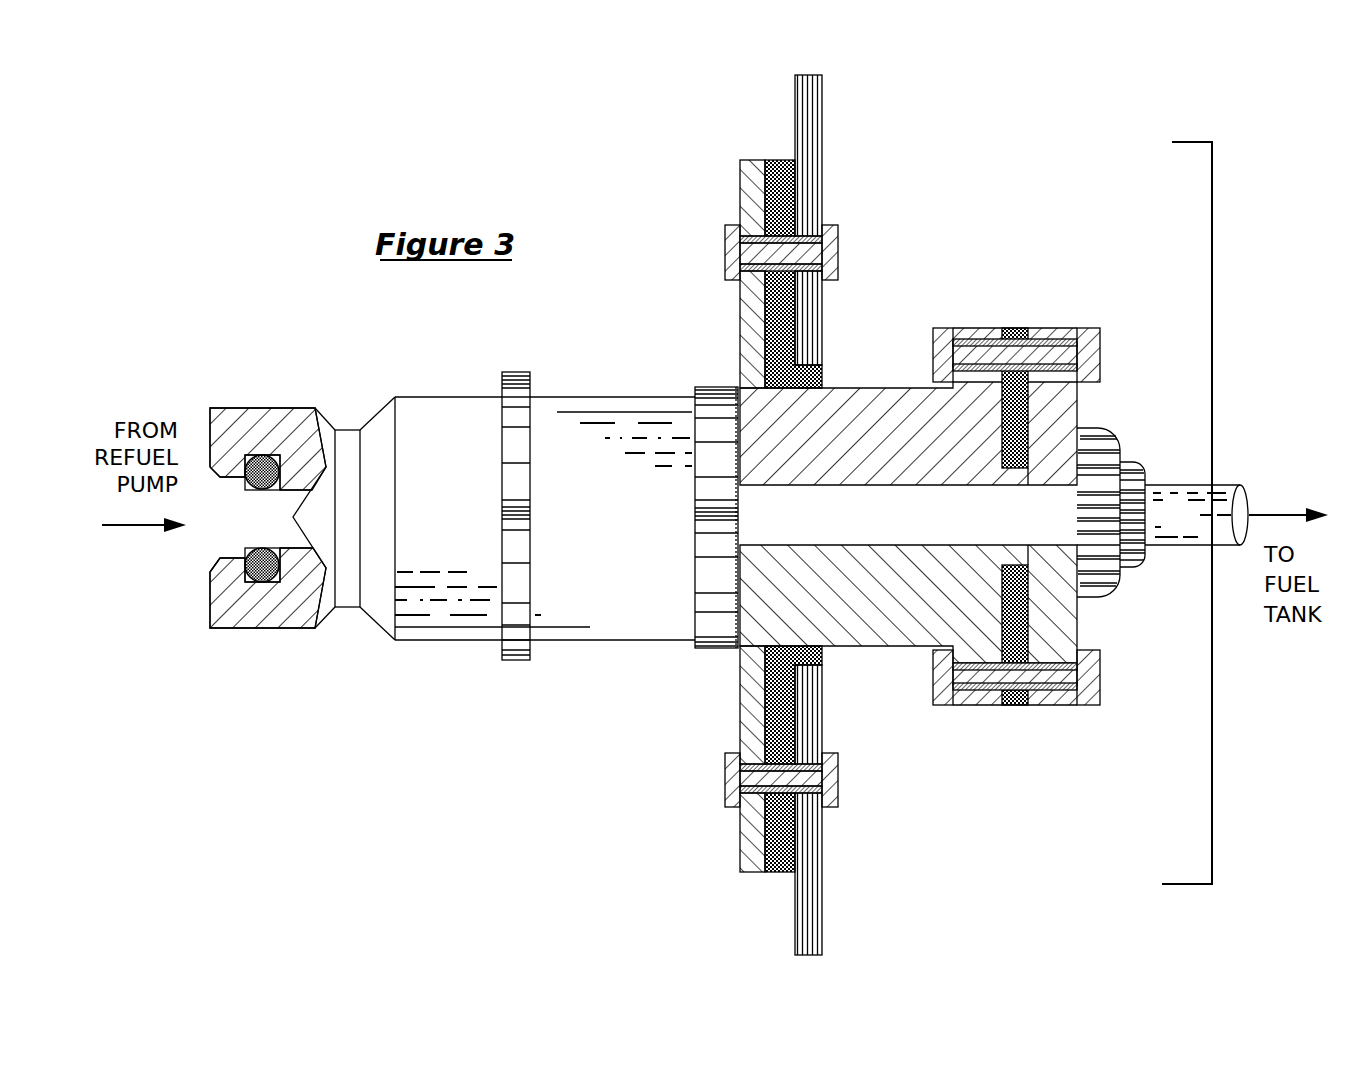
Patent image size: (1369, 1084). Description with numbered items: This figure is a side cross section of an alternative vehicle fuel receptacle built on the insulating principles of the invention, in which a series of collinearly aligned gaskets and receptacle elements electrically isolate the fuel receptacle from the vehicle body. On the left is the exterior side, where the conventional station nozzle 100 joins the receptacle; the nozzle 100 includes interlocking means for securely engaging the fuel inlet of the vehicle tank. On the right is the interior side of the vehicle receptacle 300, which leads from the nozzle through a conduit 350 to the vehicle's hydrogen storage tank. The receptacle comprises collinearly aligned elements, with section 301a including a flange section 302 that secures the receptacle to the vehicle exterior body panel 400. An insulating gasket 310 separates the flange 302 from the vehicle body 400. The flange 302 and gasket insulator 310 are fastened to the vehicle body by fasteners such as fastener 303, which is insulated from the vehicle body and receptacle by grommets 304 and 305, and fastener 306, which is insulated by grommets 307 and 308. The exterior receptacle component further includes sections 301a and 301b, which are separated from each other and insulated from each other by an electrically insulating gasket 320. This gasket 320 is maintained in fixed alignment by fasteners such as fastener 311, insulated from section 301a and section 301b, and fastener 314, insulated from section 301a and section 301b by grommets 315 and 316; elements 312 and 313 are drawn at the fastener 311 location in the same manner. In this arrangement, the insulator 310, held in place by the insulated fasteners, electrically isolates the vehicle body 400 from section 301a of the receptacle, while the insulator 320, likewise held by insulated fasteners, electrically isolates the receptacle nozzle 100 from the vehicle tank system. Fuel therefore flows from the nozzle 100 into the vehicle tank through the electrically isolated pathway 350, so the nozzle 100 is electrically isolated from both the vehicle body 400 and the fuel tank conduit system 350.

The station nozzle 100 is at (587, 397).
The vehicle receptacle 300 is at (1225, 819).
The receptacle section 301a is at (877, 386).
The receptacle section 301b is at (1065, 617).
The flange section 302 is at (740, 178).
The fastener 303 is at (725, 252).
The grommet 304 is at (738, 213).
The grommet 305 is at (825, 213).
The fastener 306 is at (725, 778).
The grommet 307 is at (740, 825).
The grommet 308 is at (825, 825).
The insulating gasket 310 is at (777, 193).
The fastener 311 is at (1103, 355).
The upper flange inner plate 312 is at (953, 328).
The upper flange outer plate 313 is at (1080, 328).
The fastener 314 is at (1103, 677).
The grommet 315 is at (952, 708).
The grommet 316 is at (1080, 708).
The electrically insulating gasket 320 is at (1013, 328).
The conduit 350 is at (1169, 485).
The vehicle body 400 is at (808, 130).